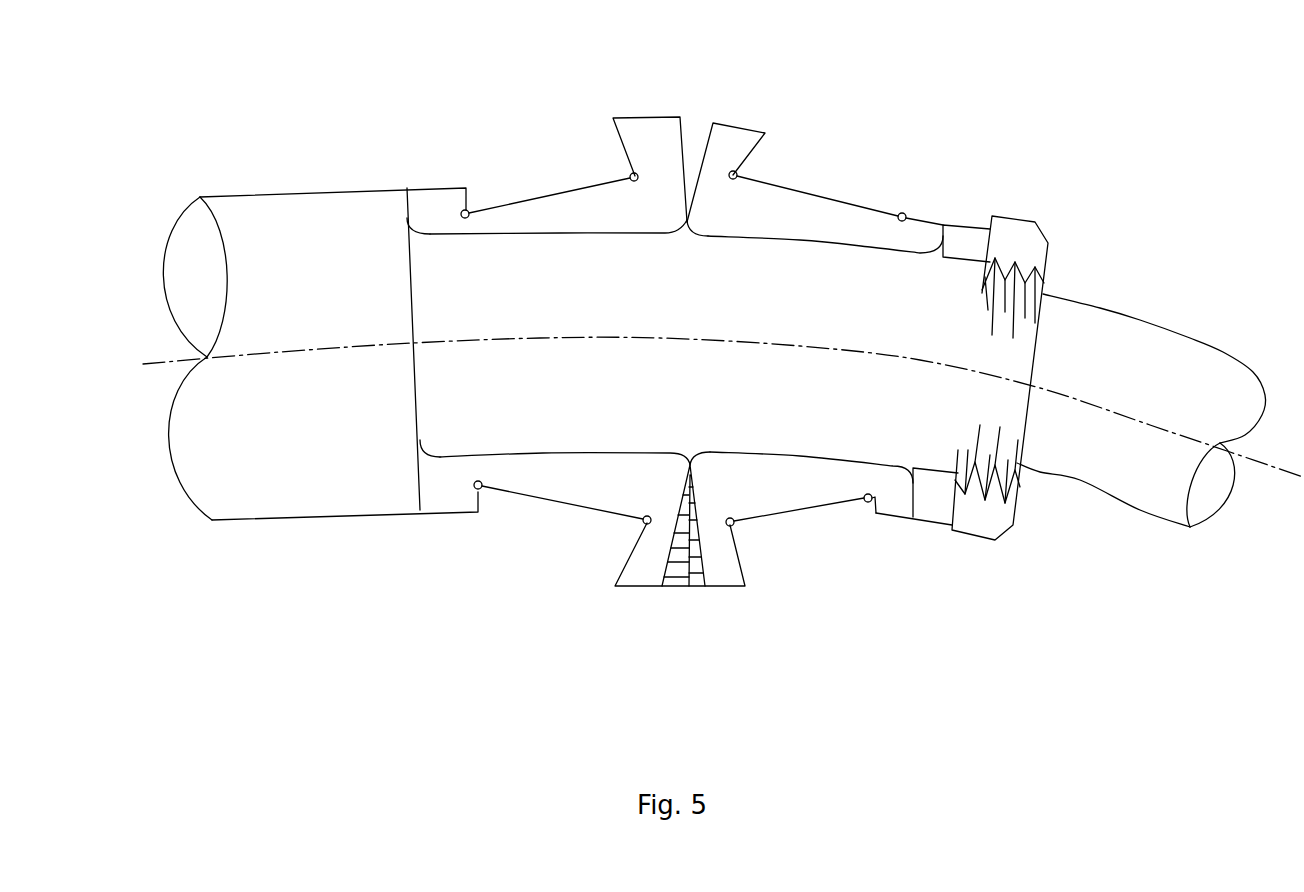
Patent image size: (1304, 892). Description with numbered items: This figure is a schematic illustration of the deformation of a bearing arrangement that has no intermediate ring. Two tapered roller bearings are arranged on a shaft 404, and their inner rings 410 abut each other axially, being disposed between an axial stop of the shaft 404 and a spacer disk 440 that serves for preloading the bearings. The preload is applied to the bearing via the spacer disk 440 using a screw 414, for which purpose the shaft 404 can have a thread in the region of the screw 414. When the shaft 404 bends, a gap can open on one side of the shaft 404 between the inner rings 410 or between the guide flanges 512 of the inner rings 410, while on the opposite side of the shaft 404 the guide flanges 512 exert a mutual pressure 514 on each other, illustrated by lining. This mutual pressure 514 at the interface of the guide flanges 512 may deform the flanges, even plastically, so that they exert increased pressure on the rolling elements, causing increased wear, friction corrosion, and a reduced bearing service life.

The shaft 404 is at (280, 192).
The inner rings 410 is at (548, 210).
The guide flanges 512 is at (643, 125).
The mutual pressure 514 is at (695, 585).
The spacer disk 440 is at (962, 235).
The screw 414 is at (1015, 225).